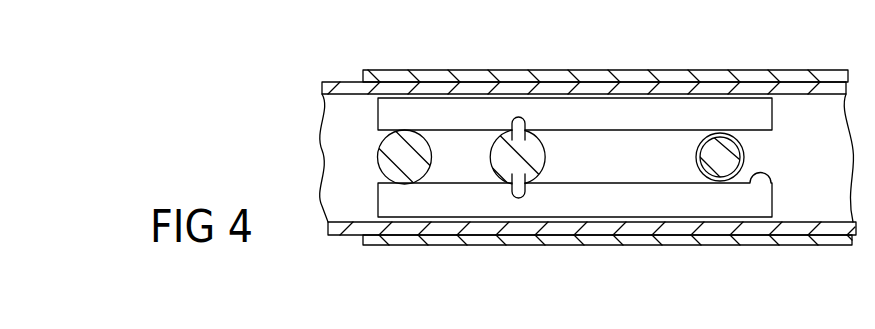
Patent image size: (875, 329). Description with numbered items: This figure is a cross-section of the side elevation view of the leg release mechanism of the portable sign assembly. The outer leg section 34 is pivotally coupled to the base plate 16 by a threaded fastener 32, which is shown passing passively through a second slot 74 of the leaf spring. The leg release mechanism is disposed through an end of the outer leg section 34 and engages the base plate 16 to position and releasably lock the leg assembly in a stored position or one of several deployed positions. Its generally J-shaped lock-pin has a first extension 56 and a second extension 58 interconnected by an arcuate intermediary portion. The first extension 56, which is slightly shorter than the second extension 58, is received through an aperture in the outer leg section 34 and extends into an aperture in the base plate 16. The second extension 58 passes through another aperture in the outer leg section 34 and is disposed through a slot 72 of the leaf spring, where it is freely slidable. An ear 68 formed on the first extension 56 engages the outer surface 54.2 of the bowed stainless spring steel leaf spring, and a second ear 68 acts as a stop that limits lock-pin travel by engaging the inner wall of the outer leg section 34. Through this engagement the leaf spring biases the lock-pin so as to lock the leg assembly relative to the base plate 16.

The base plate 16 is at (516, 73).
The threaded fastener 32 is at (728, 140).
The outer leg section 34 is at (357, 229).
The outer surface of leaf spring 54.2 is at (652, 171).
The first extension 56 is at (535, 156).
The second extension 58 is at (393, 153).
The ear 68 is at (519, 121).
The slot 72 is at (457, 131).
The second slot 74 is at (766, 175).